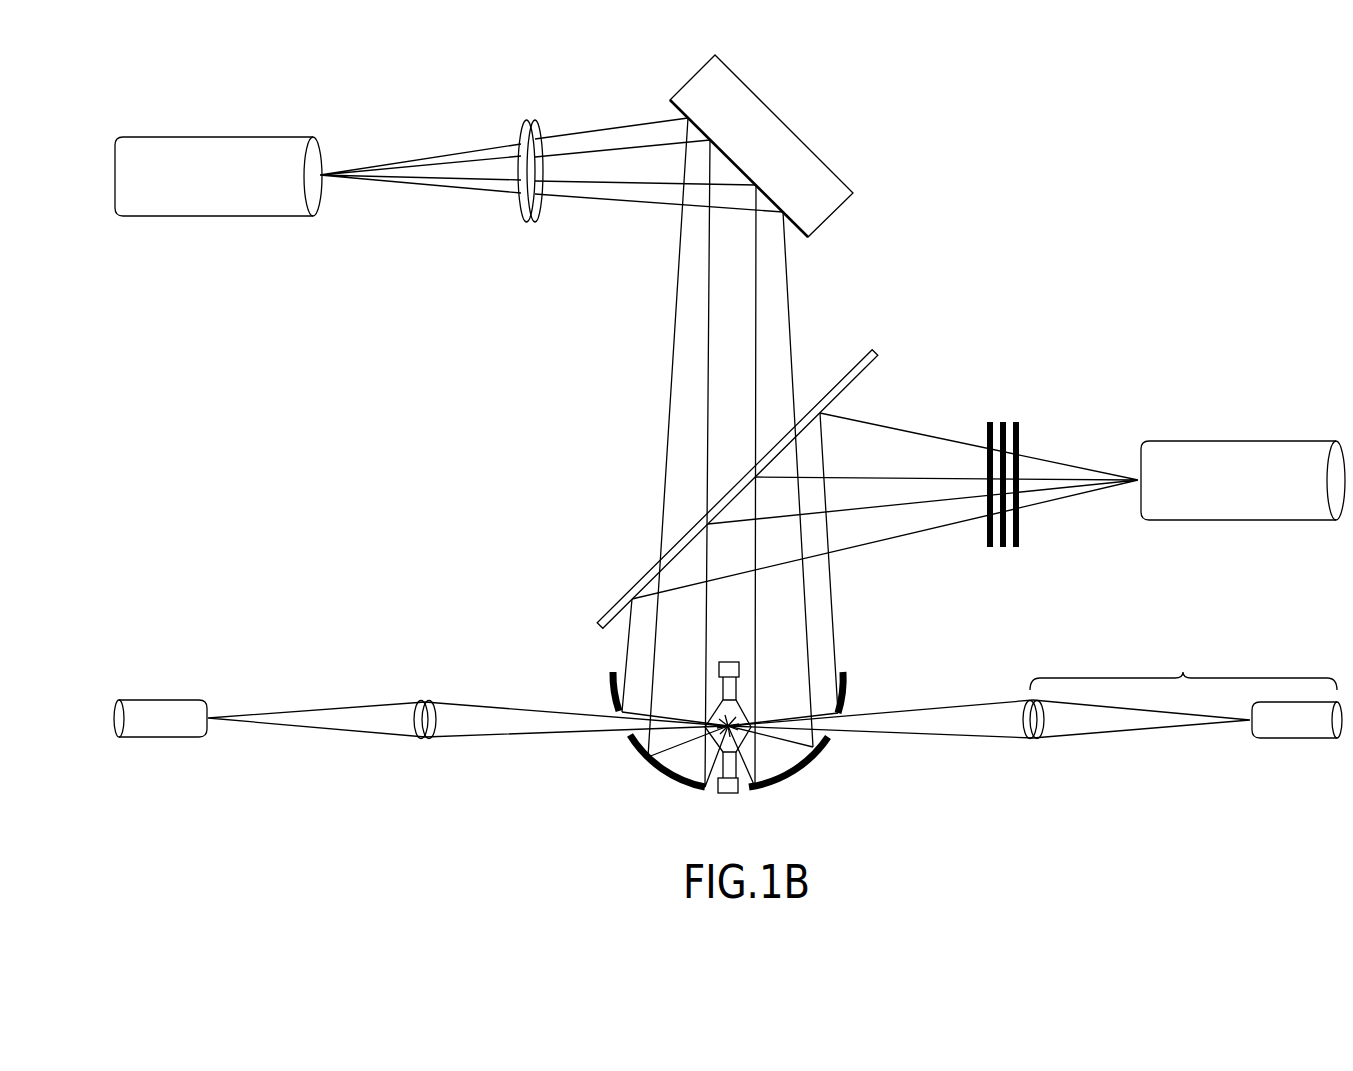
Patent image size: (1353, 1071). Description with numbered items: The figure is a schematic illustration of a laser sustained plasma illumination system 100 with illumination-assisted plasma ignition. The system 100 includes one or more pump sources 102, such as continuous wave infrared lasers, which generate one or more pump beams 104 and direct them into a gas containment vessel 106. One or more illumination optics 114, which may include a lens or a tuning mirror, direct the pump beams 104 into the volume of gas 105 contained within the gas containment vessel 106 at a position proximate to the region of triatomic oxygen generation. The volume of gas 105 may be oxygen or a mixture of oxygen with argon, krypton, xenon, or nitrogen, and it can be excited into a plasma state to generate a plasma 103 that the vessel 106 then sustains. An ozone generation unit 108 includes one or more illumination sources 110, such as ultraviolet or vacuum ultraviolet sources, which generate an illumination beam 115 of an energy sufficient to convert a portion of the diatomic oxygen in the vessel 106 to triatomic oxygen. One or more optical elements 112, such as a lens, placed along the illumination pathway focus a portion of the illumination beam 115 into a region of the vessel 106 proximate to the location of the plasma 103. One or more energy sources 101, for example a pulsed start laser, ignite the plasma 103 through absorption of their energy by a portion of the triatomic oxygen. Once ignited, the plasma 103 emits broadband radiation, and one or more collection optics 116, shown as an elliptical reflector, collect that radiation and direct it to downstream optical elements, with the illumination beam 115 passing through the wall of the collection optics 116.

The laser sustained plasma illumination system 100 is at (257, 57).
The energy source 101 is at (180, 729).
The pump source 102 is at (228, 189).
The plasma 103 is at (712, 742).
The pump beam 104 is at (671, 370).
The volume of gas 105 is at (737, 718).
The gas containment vessel 106 is at (731, 796).
The ozone generation unit 108 is at (1183, 669).
The illumination source 110 is at (1317, 731).
The optical element 112 is at (1037, 738).
The illumination optics 114 is at (530, 120).
The illumination beam 115 is at (945, 729).
The collection optics 116 is at (848, 384).